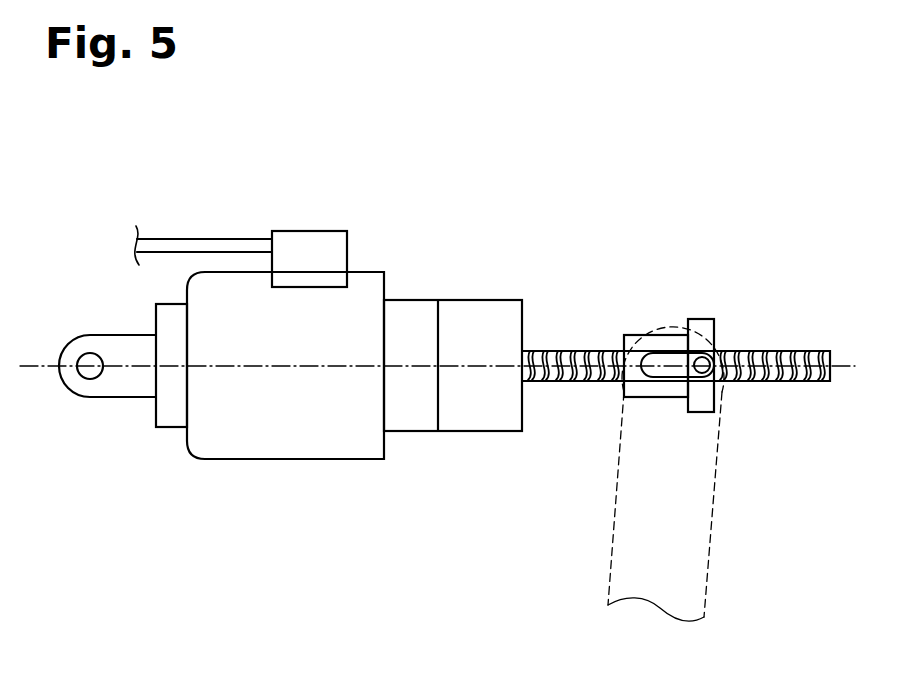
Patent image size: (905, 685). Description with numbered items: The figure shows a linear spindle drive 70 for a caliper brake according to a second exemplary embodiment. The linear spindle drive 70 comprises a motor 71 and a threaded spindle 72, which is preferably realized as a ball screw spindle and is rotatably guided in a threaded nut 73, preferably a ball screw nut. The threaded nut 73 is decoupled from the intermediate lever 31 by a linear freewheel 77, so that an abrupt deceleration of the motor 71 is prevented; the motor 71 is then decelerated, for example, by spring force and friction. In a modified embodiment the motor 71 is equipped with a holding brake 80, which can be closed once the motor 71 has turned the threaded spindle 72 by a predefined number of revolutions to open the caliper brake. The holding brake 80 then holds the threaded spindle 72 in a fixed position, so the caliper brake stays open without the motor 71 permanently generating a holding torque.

The linear spindle drive 70 is at (100, 162).
The motor 71 is at (271, 433).
The holding brake 80 is at (416, 328).
The threaded spindle 72 is at (580, 352).
The threaded nut 73 is at (652, 345).
The linear freewheel 77 is at (703, 325).
The intermediate lever 31 is at (687, 527).